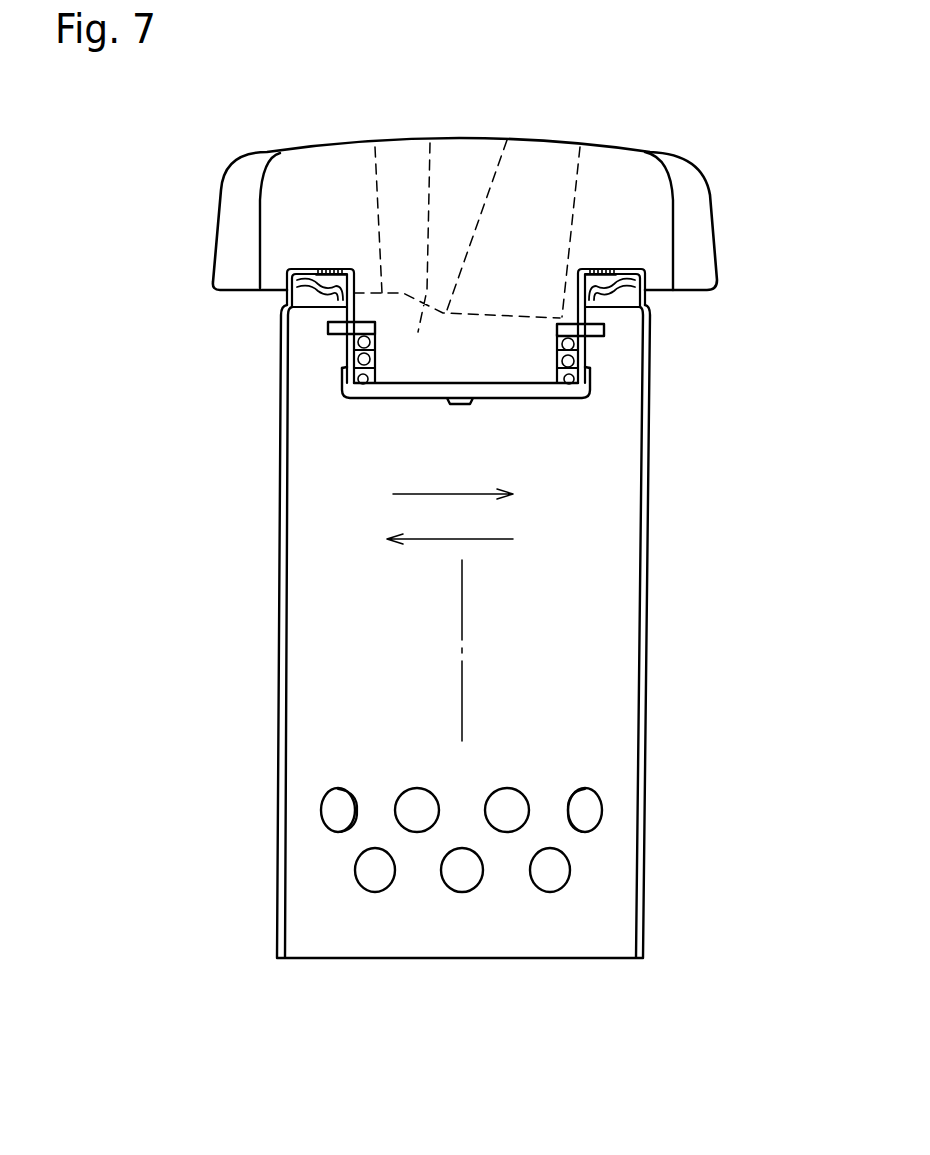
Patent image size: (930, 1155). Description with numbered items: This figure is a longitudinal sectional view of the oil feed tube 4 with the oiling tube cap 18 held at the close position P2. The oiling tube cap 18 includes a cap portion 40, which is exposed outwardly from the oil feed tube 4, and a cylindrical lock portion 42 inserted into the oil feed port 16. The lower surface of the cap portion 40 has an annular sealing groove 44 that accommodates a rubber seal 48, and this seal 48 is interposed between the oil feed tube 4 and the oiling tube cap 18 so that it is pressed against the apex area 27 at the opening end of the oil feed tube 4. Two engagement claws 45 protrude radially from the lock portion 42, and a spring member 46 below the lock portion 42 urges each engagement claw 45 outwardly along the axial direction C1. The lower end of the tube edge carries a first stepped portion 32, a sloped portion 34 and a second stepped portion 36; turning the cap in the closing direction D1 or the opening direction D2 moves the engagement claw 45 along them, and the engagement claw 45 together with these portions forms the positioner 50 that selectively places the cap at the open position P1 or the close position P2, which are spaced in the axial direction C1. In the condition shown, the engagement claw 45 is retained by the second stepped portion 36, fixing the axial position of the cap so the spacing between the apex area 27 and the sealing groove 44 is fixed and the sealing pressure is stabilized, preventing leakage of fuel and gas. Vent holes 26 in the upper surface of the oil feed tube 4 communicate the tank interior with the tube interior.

The oil feed tube 4 is at (663, 722).
The oil feed port 16 is at (430, 143).
The oiling tube cap 18 is at (706, 150).
The vent hole 26 is at (553, 875).
The apex area 27 is at (300, 267).
The first stepped portion 32 is at (375, 147).
The sloped portion 34 is at (507, 140).
The second stepped portion 36 is at (580, 147).
The cap portion 40 is at (697, 202).
The lock portion 42 is at (530, 370).
The sealing groove 44 is at (297, 307).
The engagement claw 45 is at (332, 332).
The spring member 46 is at (357, 397).
The seal 48 is at (318, 268).
The positioner 50 is at (636, 334).
The open position P1 is at (379, 90).
The close position P2 is at (587, 81).
The closing direction D1 is at (484, 495).
The opening direction D2 is at (430, 540).
The axial direction C1 is at (462, 712).